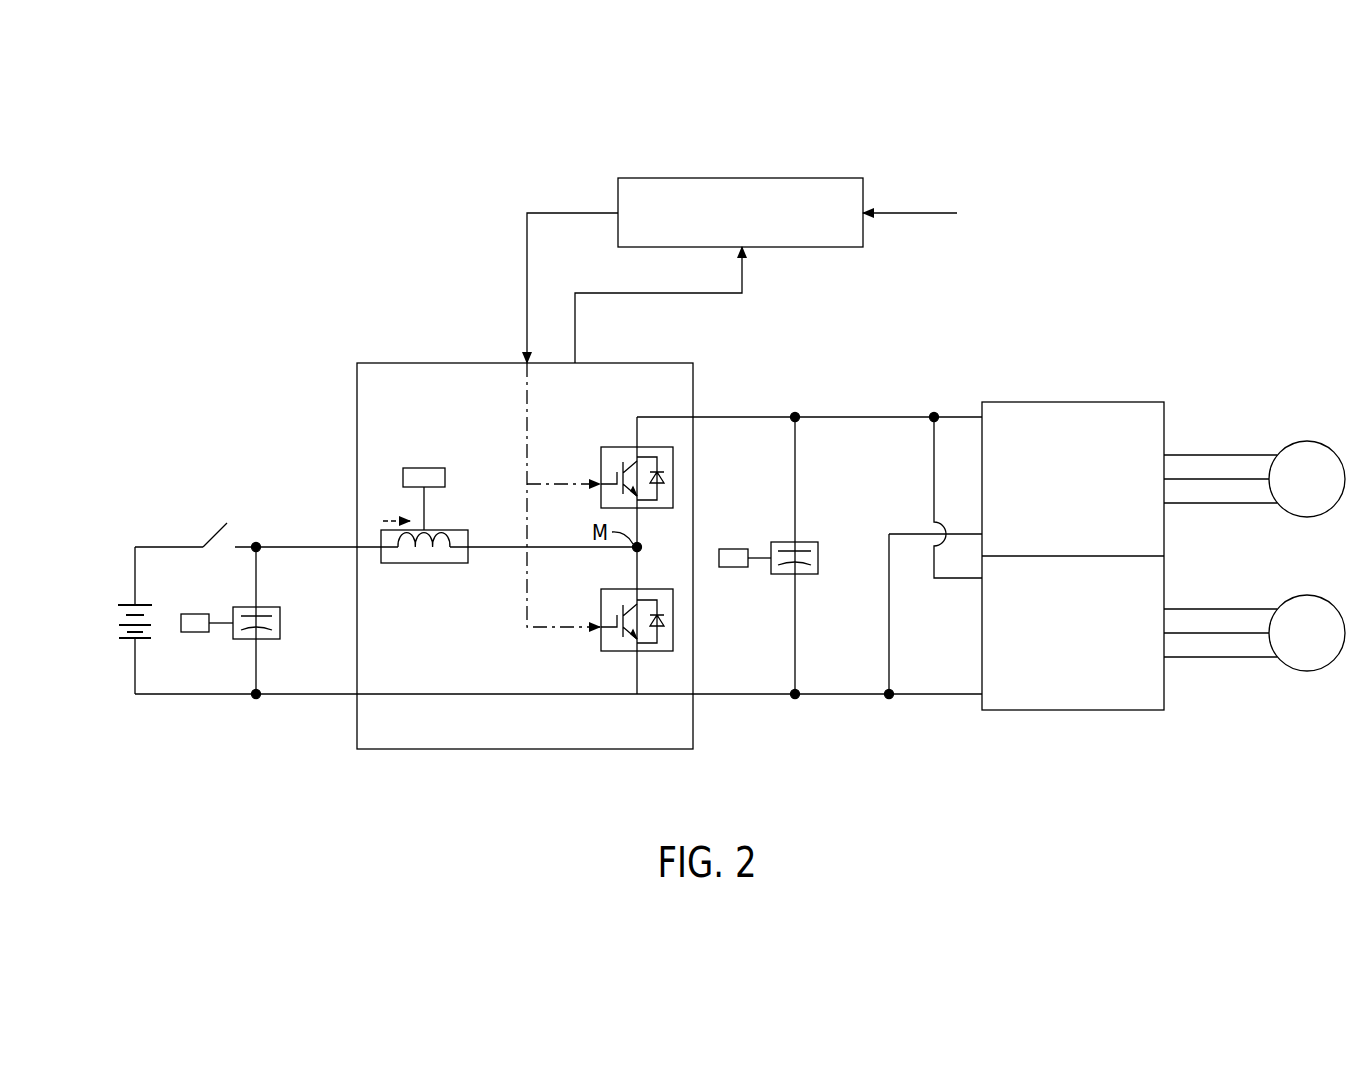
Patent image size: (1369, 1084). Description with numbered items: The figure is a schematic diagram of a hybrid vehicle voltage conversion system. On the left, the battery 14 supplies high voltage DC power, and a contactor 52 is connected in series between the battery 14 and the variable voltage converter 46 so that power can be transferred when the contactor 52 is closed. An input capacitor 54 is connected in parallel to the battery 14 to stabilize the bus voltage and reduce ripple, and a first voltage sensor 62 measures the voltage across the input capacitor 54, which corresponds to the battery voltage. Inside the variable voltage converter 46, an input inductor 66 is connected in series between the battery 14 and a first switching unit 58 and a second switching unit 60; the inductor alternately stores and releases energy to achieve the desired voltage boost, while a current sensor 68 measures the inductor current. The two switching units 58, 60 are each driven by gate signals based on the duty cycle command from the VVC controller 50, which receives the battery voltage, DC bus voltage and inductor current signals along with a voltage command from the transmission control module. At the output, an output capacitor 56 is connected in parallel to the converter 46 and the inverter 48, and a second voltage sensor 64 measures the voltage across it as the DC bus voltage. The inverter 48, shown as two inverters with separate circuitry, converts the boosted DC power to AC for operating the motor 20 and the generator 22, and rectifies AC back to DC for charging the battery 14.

The battery 14 is at (104, 645).
The motor 20 is at (1306, 441).
The generator 22 is at (1306, 595).
The variable voltage converter 46 is at (525, 750).
The inverter 48 is at (1111, 380).
The VVC controller 50 is at (742, 177).
The contactor 52 is at (203, 516).
The input capacitor 54 is at (267, 605).
The output capacitor 56 is at (806, 541).
The first switching unit 58 is at (618, 446).
The second switching unit 60 is at (615, 652).
The first voltage sensor 62 is at (197, 633).
The second voltage sensor 64 is at (735, 548).
The input inductor 66 is at (452, 564).
The current sensor 68 is at (445, 478).